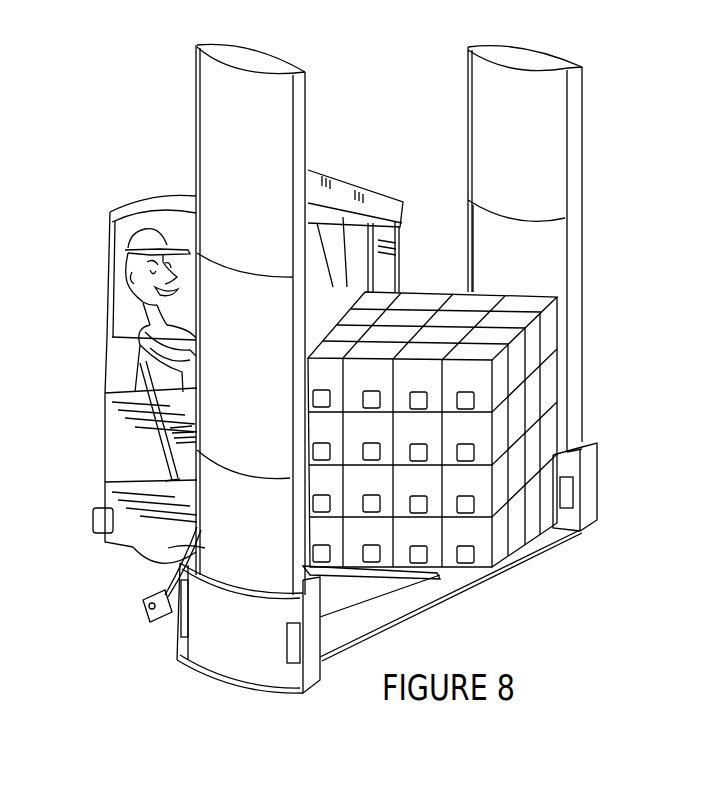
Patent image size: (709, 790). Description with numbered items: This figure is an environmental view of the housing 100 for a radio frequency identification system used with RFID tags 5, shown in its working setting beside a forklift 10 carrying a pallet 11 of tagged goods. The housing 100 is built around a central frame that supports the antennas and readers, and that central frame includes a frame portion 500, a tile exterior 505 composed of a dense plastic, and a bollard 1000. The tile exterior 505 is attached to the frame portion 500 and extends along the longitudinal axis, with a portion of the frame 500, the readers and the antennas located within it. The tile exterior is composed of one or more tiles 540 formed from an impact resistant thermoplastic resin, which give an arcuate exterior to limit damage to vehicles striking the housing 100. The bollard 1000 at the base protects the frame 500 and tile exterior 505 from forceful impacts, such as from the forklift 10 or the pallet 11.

The RFID tags 5 is at (418, 505).
The forklift 10 is at (113, 460).
The pallet 11 is at (517, 547).
The housing 100 is at (399, 429).
The frame portion 500 is at (575, 107).
The tile exterior 505 is at (213, 108).
The tiles 540 is at (552, 193).
The bollard 1000 is at (267, 703).